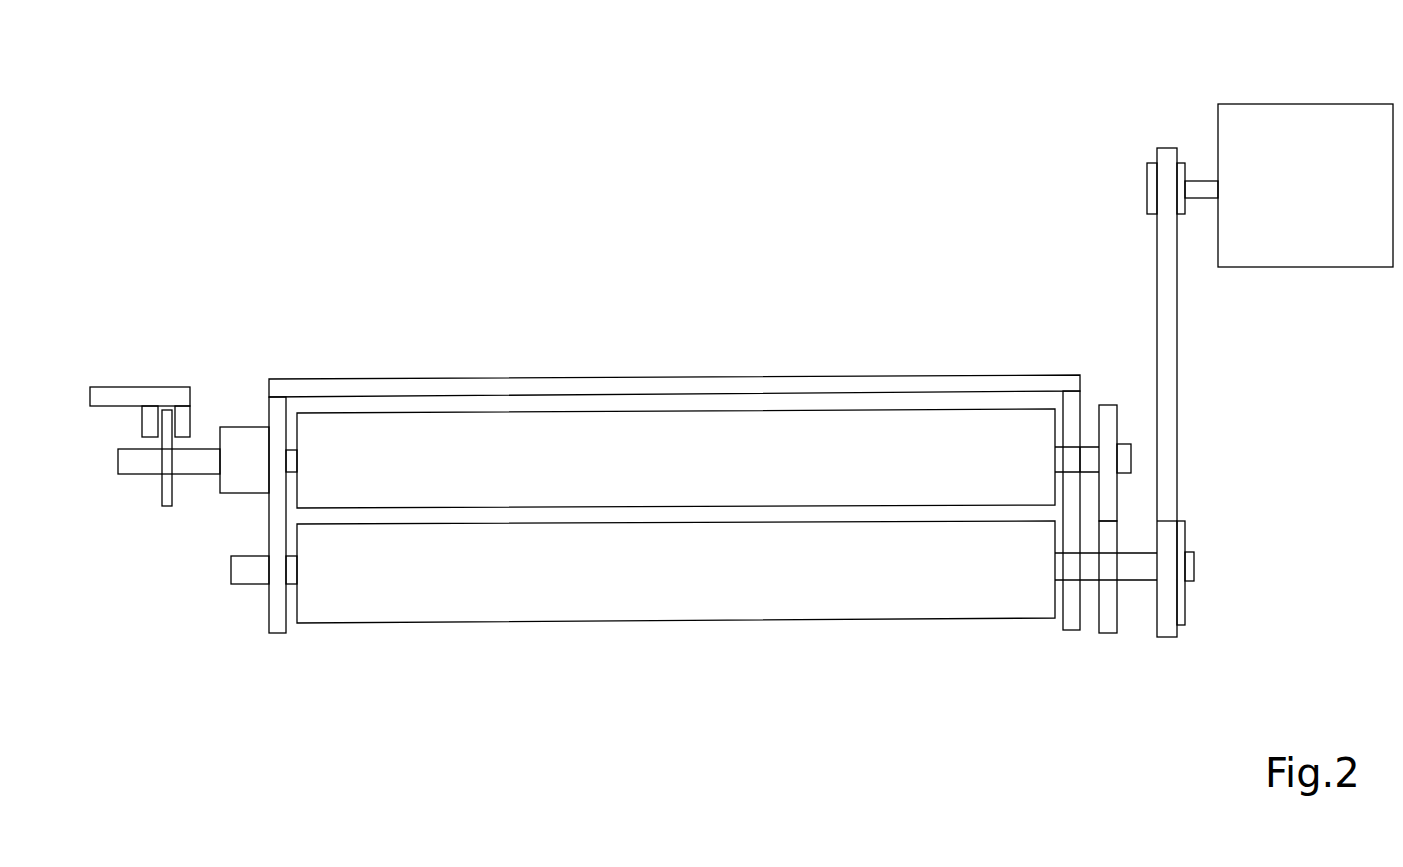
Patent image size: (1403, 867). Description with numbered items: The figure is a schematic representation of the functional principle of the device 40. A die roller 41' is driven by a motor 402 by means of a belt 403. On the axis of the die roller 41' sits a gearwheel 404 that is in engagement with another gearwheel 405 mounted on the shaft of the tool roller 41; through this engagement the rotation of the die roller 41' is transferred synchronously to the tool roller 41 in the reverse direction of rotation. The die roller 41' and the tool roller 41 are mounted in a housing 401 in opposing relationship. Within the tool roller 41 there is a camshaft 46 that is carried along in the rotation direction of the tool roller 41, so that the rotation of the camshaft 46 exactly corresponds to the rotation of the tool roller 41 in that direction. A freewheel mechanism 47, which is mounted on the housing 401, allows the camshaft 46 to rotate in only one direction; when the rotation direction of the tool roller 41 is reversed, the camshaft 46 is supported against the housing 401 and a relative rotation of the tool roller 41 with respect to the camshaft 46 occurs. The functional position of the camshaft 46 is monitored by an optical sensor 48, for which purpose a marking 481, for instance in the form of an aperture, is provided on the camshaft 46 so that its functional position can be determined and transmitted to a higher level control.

The transport device 40 is at (503, 268).
The tool roller 41 is at (676, 553).
The die roller 41' is at (676, 609).
The camshaft 46 is at (125, 465).
The freewheel mechanism 47 is at (242, 437).
The optical sensor 48 is at (153, 393).
The marking 481 is at (163, 498).
The housing 401 is at (638, 388).
The motor 402 is at (1287, 233).
The belt 403 is at (1163, 346).
The gearwheel 404 is at (1110, 627).
The gearwheel 405 is at (1110, 413).